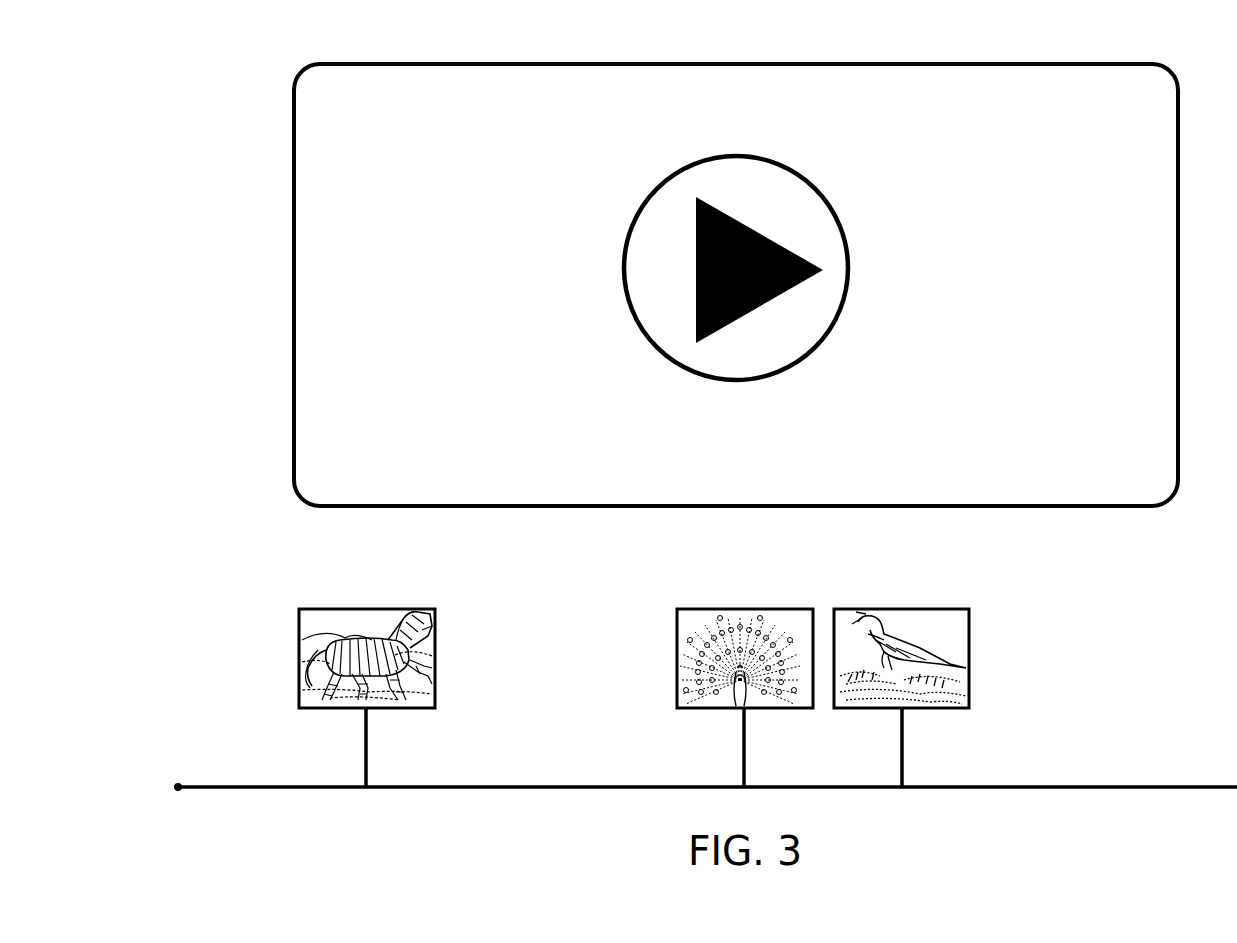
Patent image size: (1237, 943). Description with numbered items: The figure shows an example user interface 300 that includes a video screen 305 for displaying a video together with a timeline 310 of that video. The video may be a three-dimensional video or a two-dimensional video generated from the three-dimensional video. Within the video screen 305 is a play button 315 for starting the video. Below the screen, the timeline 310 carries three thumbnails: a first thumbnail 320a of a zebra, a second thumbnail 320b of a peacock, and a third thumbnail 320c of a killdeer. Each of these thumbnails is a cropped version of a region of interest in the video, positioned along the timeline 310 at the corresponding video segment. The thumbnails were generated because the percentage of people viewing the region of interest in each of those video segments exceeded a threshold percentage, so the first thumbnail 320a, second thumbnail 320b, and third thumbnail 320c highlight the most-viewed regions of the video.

The user interface 300 is at (156, 82).
The video screen 305 is at (563, 507).
The timeline 310 is at (208, 789).
The play button 315 is at (703, 378).
The first thumbnail 320a is at (323, 709).
The second thumbnail 320b is at (703, 709).
The third thumbnail 320c is at (870, 709).